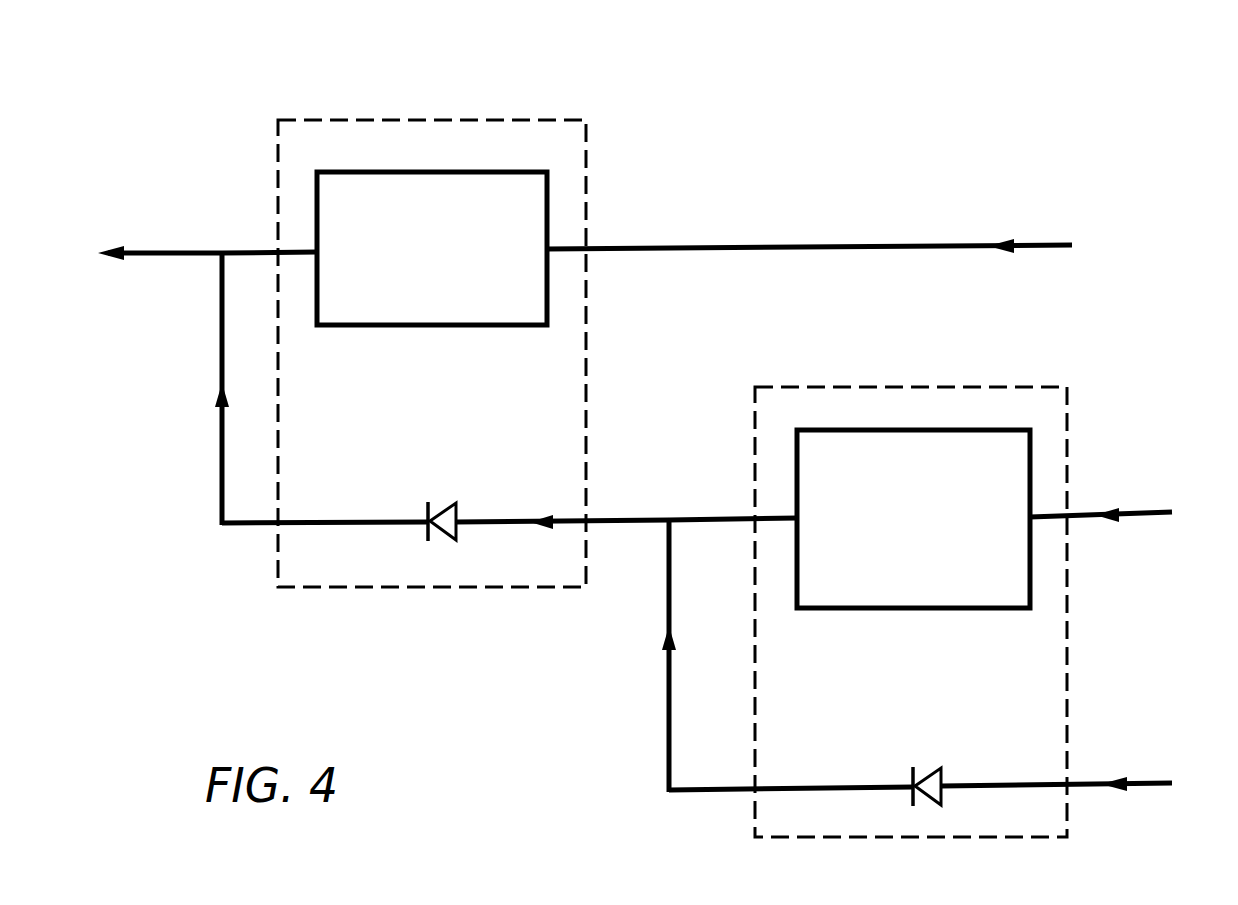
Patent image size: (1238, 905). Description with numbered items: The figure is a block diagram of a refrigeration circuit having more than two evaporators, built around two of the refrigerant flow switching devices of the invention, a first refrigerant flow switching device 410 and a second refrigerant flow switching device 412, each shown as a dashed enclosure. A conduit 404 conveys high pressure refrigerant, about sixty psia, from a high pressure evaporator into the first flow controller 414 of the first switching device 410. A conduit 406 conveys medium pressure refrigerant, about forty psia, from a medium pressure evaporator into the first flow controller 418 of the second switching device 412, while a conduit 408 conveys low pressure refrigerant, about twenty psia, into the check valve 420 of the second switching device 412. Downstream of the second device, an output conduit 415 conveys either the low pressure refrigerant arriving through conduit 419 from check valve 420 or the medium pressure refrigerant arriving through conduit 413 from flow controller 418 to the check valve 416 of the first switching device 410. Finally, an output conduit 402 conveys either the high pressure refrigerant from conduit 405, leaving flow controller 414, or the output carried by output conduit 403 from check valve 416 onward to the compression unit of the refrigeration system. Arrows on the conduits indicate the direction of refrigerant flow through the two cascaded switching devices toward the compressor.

The output conduit 402 is at (130, 250).
The output conduit 403 is at (220, 510).
The conduit 404 is at (928, 243).
The conduit 405 is at (245, 250).
The conduit 406 is at (1132, 512).
The conduit 408 is at (1127, 782).
The first refrigerant flow switching device 410 is at (545, 115).
The second refrigerant flow switching device 412 is at (985, 384).
The conduit 413 is at (705, 519).
The first flow controller 414 is at (487, 327).
The output conduit 415 is at (608, 519).
The check valve 416 is at (458, 514).
The first flow controller 418 is at (982, 610).
The conduit 419 is at (668, 766).
The check valve 420 is at (943, 772).